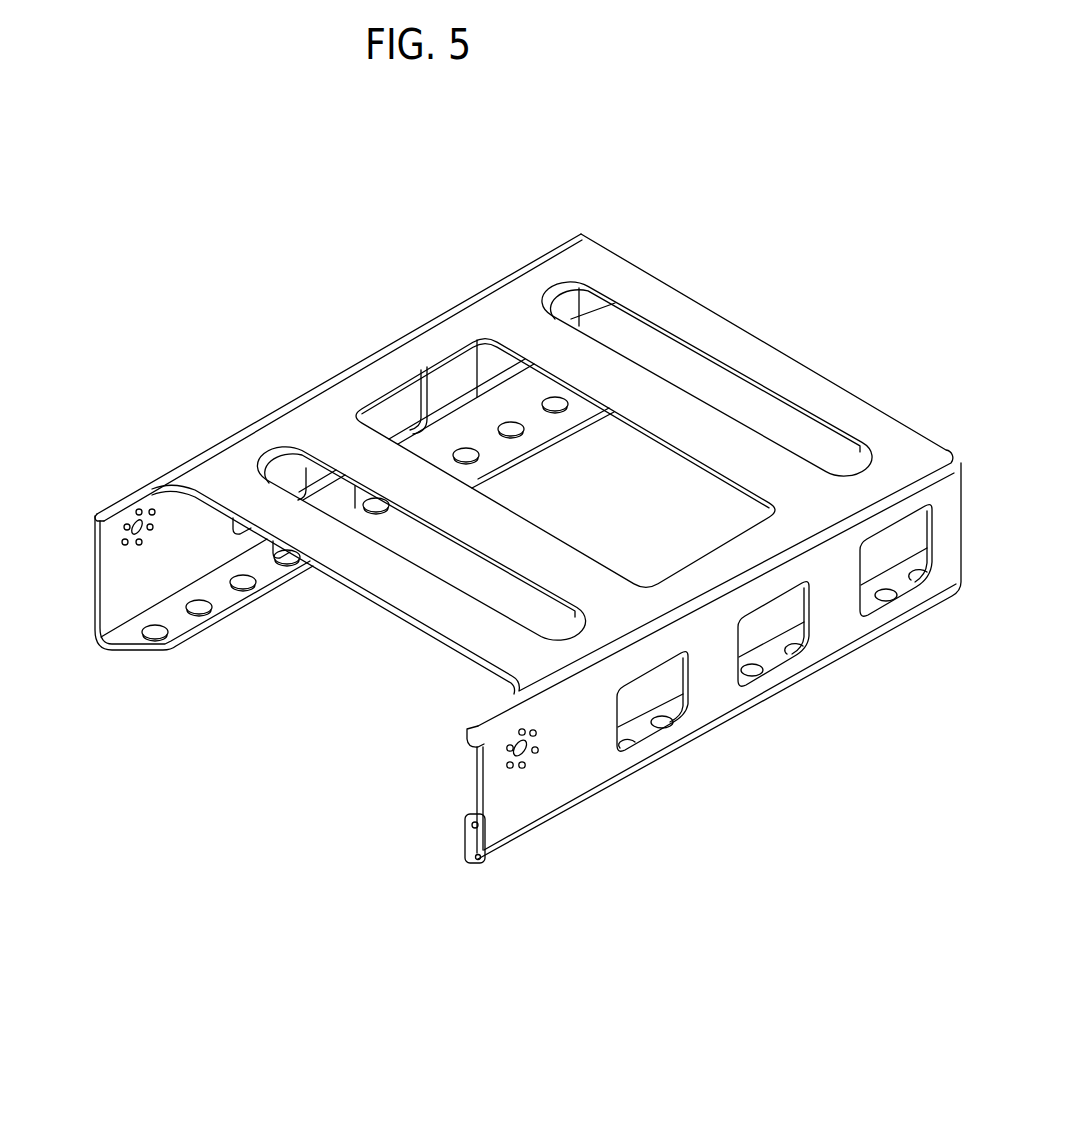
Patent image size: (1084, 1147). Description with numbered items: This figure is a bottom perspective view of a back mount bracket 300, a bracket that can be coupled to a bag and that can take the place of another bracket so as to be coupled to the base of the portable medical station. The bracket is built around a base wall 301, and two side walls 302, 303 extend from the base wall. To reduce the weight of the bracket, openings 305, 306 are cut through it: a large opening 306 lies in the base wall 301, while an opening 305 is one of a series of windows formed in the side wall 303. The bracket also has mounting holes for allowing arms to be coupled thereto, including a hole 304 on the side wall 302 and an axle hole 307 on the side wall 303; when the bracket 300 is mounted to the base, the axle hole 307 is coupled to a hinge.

The back mount bracket 300 is at (752, 258).
The base wall 301 is at (513, 318).
The side wall 302 is at (135, 583).
The side wall 303 is at (542, 813).
The hole 304 is at (209, 612).
The opening 305 is at (673, 725).
The opening 306 is at (553, 472).
The axle hole 307 is at (512, 752).